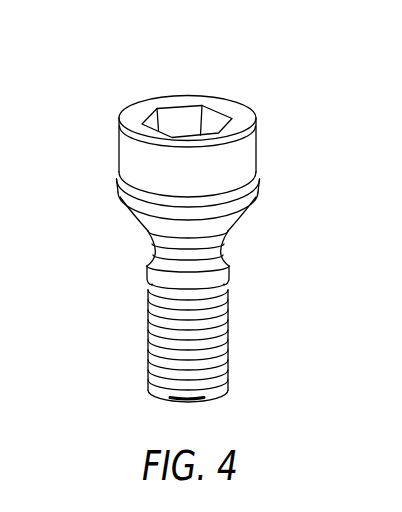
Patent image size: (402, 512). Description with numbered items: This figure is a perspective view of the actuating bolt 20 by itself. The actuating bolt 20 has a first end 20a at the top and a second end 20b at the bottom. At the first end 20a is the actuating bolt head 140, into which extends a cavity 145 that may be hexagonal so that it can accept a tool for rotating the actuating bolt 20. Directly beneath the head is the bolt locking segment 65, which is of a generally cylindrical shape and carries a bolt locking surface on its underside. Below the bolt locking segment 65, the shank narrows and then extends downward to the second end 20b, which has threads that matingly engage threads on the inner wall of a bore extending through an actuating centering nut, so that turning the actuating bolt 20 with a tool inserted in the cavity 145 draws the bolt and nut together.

The actuating bolt 20 is at (203, 214).
The first end 20a is at (221, 132).
The second end 20b is at (109, 378).
The bolt locking segment 65 is at (256, 167).
The actuating bolt head 140 is at (148, 100).
The cavity 145 is at (190, 120).